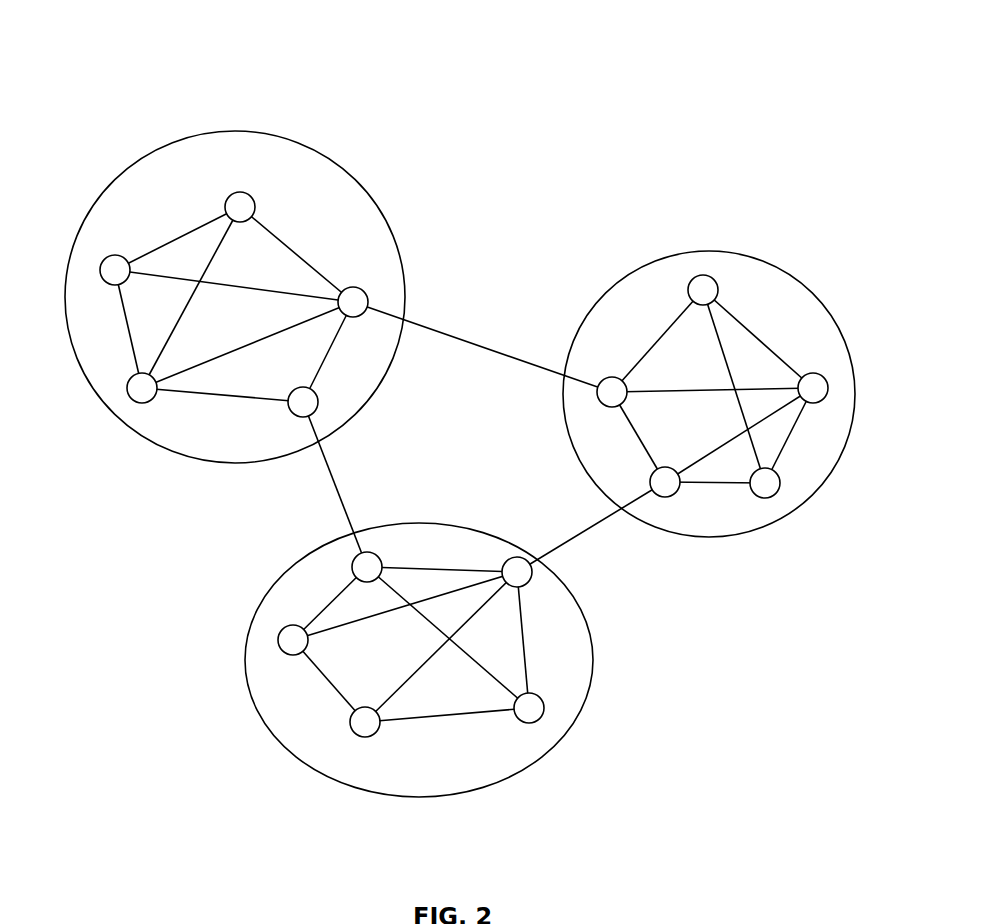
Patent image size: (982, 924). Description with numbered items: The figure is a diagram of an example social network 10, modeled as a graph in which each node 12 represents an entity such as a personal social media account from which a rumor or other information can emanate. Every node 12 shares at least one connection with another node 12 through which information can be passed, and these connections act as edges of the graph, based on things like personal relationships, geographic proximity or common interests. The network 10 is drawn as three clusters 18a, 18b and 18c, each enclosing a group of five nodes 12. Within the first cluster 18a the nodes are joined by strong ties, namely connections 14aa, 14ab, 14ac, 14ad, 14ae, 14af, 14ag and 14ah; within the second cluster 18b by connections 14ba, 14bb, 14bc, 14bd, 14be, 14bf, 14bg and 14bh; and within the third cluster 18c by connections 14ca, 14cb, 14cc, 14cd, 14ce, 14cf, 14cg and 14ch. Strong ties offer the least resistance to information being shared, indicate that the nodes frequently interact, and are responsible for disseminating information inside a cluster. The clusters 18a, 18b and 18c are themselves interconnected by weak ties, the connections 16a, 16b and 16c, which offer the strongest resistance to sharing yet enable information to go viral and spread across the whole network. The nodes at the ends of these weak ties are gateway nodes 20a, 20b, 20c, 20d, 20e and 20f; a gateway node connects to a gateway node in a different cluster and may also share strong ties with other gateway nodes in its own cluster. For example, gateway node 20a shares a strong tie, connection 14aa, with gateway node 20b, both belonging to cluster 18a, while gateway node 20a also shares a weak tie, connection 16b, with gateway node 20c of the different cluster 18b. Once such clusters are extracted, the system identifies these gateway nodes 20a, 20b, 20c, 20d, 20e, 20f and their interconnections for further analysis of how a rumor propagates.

The social network 10 is at (122, 66).
The node 12 is at (243, 192).
The connection 14aa is at (340, 337).
The connection 14ab is at (247, 402).
The connection 14ac is at (122, 328).
The connection 14ad is at (193, 230).
The connection 14ae is at (280, 241).
The connection 14af is at (233, 290).
The connection 14ag is at (263, 348).
The connection 14ah is at (210, 263).
The connection 14ba is at (637, 437).
The connection 14bb is at (737, 493).
The connection 14bc is at (792, 435).
The connection 14bd is at (728, 303).
The connection 14be is at (645, 350).
The connection 14bf is at (643, 388).
The connection 14bg is at (720, 337).
The connection 14bh is at (760, 420).
The connection 14ca is at (418, 565).
The connection 14cb is at (523, 627).
The connection 14cc is at (482, 718).
The connection 14cd is at (333, 692).
The connection 14ce is at (326, 599).
The connection 14cf is at (333, 635).
The connection 14cg is at (442, 658).
The connection 14ch is at (423, 618).
The connection 16a is at (473, 334).
The connection 16b is at (597, 535).
The connection 16c is at (345, 484).
The cluster 18a is at (177, 142).
The cluster 18b is at (710, 252).
The cluster 18c is at (482, 787).
The gateway node 20a is at (357, 287).
The gateway node 20b is at (318, 405).
The gateway node 20c is at (598, 393).
The gateway node 20d is at (667, 497).
The gateway node 20e is at (353, 567).
The gateway node 20f is at (516, 558).